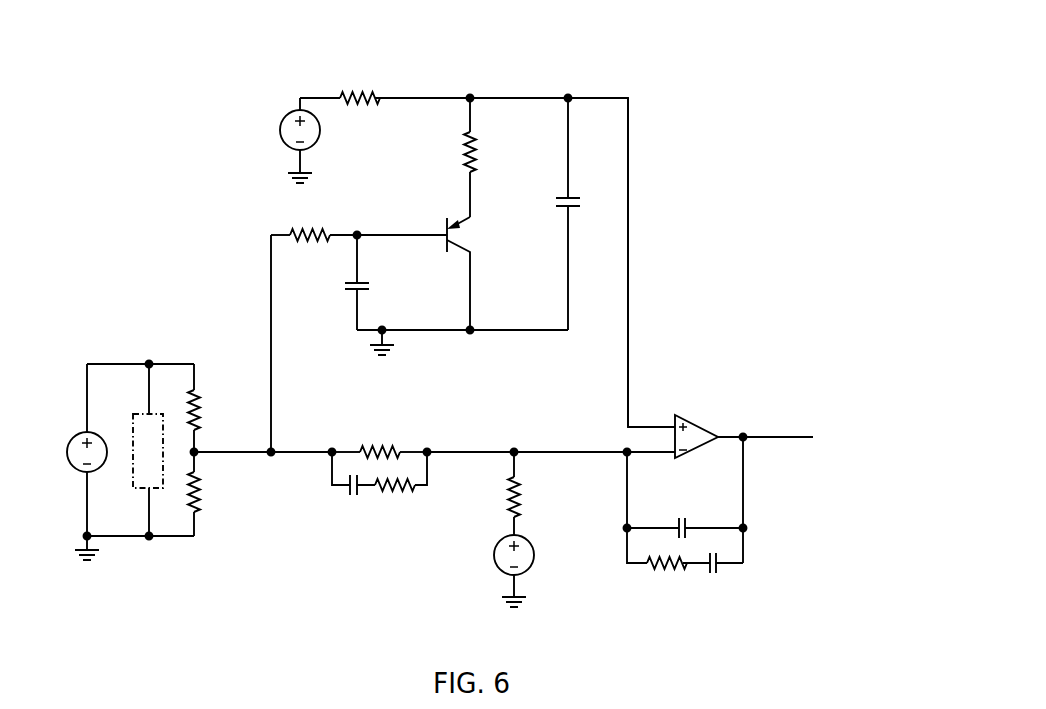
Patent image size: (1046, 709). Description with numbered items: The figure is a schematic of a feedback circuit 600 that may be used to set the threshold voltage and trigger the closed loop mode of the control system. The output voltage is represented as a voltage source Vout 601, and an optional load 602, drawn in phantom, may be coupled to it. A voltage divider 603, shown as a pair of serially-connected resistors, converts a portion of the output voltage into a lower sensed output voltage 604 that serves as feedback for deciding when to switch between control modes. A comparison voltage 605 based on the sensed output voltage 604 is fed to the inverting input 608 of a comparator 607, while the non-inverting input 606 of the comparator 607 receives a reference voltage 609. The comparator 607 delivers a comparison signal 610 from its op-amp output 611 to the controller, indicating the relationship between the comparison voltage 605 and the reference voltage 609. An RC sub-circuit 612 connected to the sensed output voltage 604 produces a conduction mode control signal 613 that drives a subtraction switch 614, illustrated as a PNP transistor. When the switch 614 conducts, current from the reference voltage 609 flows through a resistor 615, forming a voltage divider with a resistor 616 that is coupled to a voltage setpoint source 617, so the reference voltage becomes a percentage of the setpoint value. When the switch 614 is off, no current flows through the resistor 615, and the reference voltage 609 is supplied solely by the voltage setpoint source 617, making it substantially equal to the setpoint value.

The feedback circuit 600 is at (218, 52).
The voltage source Vout 601 is at (80, 435).
The load 602 is at (132, 450).
The voltage divider 603 is at (214, 398).
The sensed output voltage 604 is at (290, 450).
The comparison voltage 605 is at (462, 450).
The non-inverting input 606 is at (670, 420).
The comparator 607 is at (697, 420).
The inverting input 608 is at (670, 455).
The reference voltage 609 is at (628, 137).
The comparison signal 610 is at (770, 437).
The op-amp output 611 is at (726, 437).
The RC sub-circuit 612 is at (316, 276).
The conduction mode control signal 613 is at (400, 237).
The subtraction switch 614 is at (447, 228).
The resistor 615 is at (478, 140).
The resistor 616 is at (368, 100).
The voltage setpoint source 617 is at (285, 116).